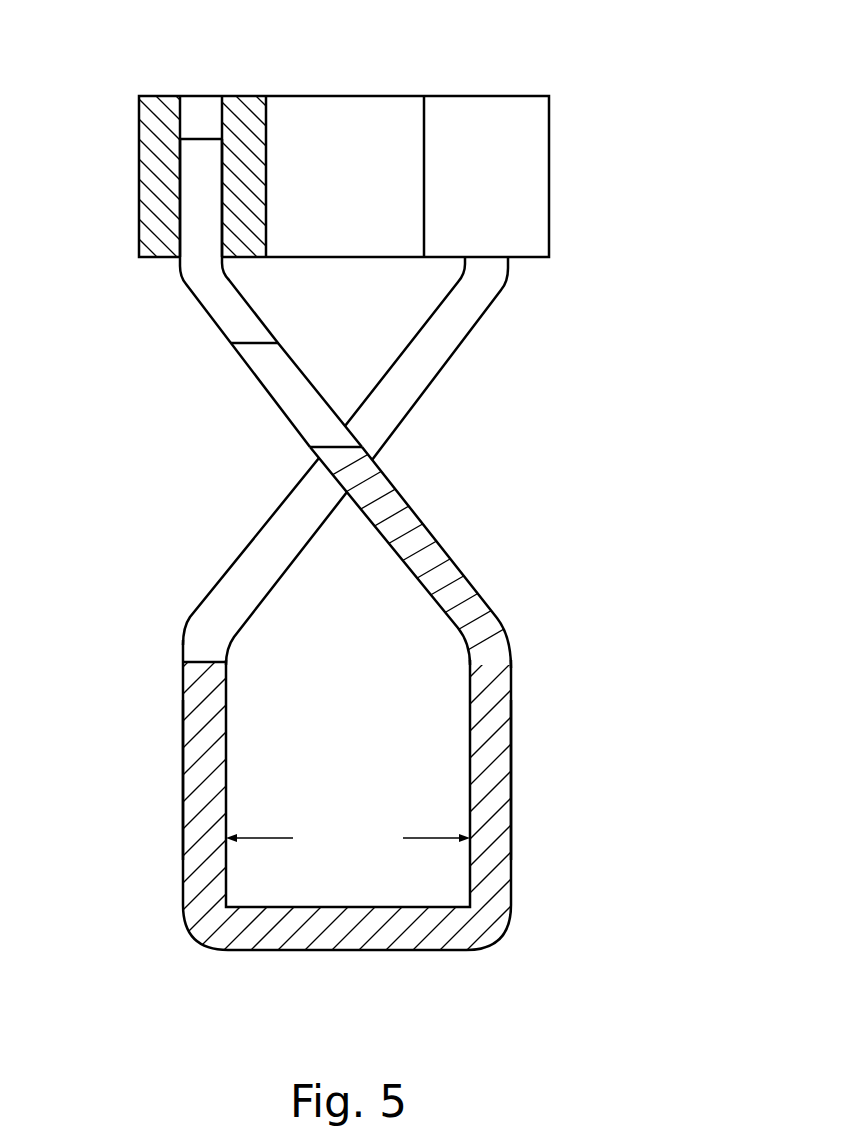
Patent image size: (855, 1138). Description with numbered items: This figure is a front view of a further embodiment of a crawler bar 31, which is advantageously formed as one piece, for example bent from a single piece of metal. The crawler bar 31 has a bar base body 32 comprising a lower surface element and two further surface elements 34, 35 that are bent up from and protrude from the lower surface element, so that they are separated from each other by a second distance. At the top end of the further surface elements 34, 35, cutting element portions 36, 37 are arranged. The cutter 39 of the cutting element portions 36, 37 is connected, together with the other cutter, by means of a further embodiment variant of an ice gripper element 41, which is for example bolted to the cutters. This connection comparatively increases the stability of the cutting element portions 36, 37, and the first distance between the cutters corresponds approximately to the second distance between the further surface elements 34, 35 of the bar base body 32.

The crawler bar 31 is at (390, 738).
The bar base body 32 is at (175, 957).
The further surface element 34 is at (181, 765).
The further surface element 35 is at (513, 763).
The cutting element portion 36 is at (238, 387).
The cutting element portion 37 is at (470, 383).
The cutter 39 is at (203, 205).
The ice gripper element 41 is at (485, 108).